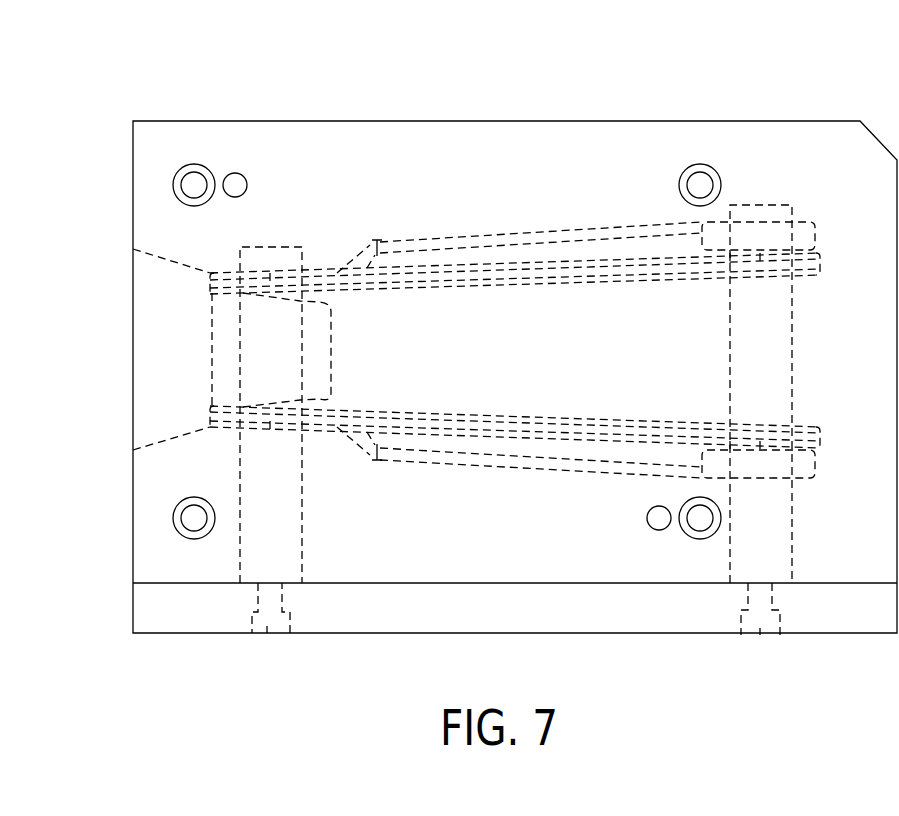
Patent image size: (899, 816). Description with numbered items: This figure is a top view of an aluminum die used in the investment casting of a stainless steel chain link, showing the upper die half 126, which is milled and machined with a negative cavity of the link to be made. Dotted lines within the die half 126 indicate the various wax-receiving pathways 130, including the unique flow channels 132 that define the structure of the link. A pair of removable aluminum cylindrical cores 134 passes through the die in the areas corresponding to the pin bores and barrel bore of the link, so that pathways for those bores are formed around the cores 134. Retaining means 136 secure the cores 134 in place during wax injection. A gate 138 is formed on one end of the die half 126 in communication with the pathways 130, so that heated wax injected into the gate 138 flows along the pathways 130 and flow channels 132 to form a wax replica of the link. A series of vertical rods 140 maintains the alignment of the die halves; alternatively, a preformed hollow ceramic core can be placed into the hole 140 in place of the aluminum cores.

The upper die half 126 is at (773, 138).
The wax-receiving pathways 130 is at (606, 277).
The flow channels 132 is at (532, 232).
The aluminum cylindrical cores 134 is at (273, 556).
The retaining means 136 is at (265, 640).
The gate 138 is at (170, 259).
The vertical rods 140 is at (194, 163).